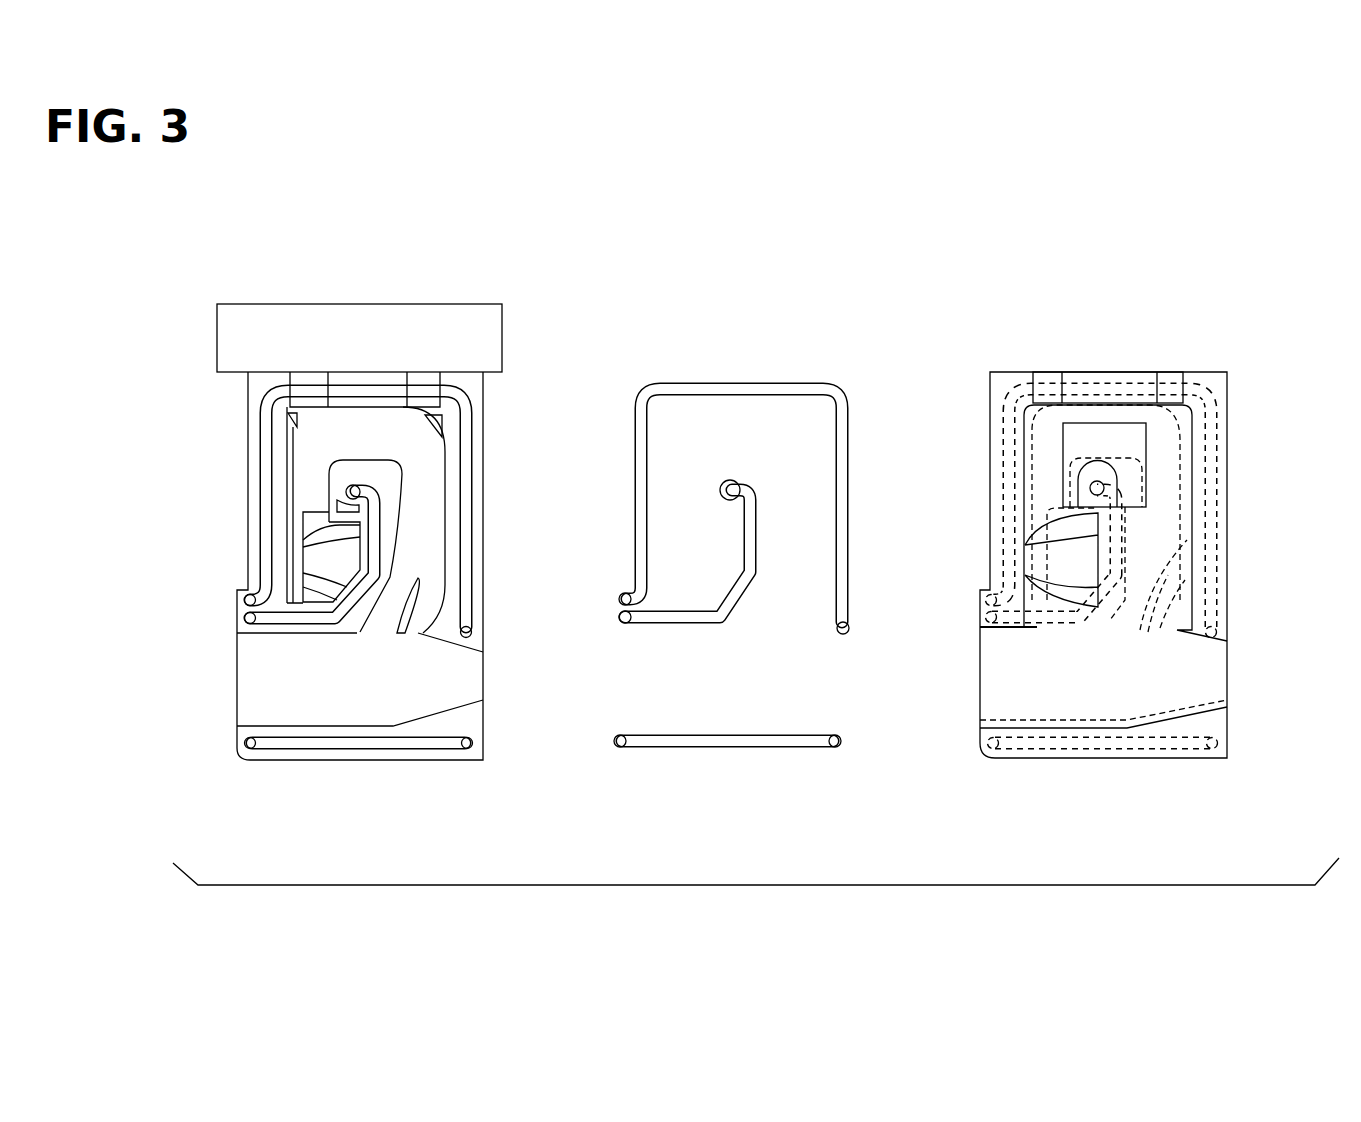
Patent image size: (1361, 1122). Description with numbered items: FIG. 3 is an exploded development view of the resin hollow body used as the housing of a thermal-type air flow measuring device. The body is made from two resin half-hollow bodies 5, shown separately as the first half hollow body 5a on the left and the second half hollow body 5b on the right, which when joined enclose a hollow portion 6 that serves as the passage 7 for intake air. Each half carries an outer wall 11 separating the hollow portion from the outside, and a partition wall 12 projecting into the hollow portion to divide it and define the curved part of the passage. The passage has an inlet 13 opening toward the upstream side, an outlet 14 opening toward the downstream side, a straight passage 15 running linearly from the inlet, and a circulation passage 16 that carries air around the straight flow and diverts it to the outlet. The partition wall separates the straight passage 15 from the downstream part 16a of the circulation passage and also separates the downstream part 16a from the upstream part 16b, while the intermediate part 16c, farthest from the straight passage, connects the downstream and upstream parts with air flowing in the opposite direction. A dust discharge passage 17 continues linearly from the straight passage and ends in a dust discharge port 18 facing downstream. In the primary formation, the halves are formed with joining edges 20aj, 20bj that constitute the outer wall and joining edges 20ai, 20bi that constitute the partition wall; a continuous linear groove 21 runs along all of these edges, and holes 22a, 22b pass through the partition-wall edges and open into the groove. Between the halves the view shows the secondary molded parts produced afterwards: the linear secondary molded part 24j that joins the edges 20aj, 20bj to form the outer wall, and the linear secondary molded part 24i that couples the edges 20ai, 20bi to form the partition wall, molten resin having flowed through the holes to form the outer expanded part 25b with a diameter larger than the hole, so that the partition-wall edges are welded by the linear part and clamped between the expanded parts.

The half-hollow body 5 is at (731, 485).
The half hollow body 5a is at (220, 277).
The half hollow body 5b is at (1228, 302).
The hollow portion 6 is at (800, 516).
The passage 7 is at (427, 470).
The outer wall 11 is at (653, 609).
The partition wall 12 is at (805, 488).
The inlet 13 is at (237, 697).
The outlet 14 is at (360, 547).
The straight passage 15 is at (272, 666).
The circulation passage 16 is at (724, 438).
The downstream part 16a is at (302, 500).
The upstream part 16b is at (430, 508).
The intermediate part 16c is at (358, 430).
The dust discharge passage 17 is at (445, 698).
The dust discharge port 18 is at (483, 680).
The joining edge 20ai is at (385, 477).
The joining edge 20aj is at (253, 465).
The joining edge 20bi is at (1140, 465).
The joining edge 20bj is at (1003, 478).
The linear groove 21 is at (468, 572).
The hole 22a is at (347, 488).
The hole 22b is at (1092, 486).
The secondary molded part 24i is at (735, 595).
The secondary molded part 24j is at (765, 387).
The outer expanded part 25b is at (723, 480).